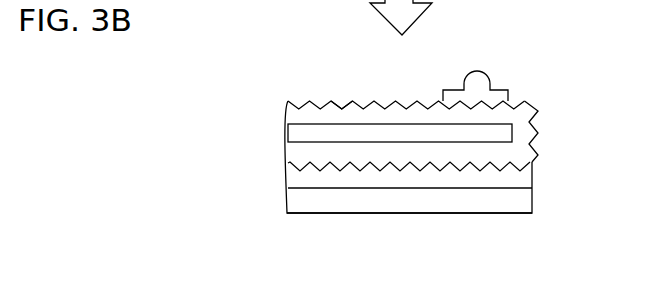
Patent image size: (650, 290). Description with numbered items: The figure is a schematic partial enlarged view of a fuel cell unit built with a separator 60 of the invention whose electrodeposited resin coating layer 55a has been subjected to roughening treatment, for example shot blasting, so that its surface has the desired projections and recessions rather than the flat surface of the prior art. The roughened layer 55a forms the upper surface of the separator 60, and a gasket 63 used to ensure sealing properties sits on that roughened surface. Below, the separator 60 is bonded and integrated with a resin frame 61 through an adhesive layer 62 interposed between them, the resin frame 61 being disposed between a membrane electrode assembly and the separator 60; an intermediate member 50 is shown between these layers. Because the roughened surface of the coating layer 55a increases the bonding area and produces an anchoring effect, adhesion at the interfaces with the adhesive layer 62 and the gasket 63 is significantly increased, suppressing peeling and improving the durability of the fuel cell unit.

The separator 60 is at (317, 98).
The resin coating layer with increased surface roughness 55a is at (343, 105).
The light emitting layer 50 is at (406, 133).
The gasket 63 is at (480, 75).
The adhesive layer 62 is at (503, 177).
The resin frame 61 is at (480, 200).